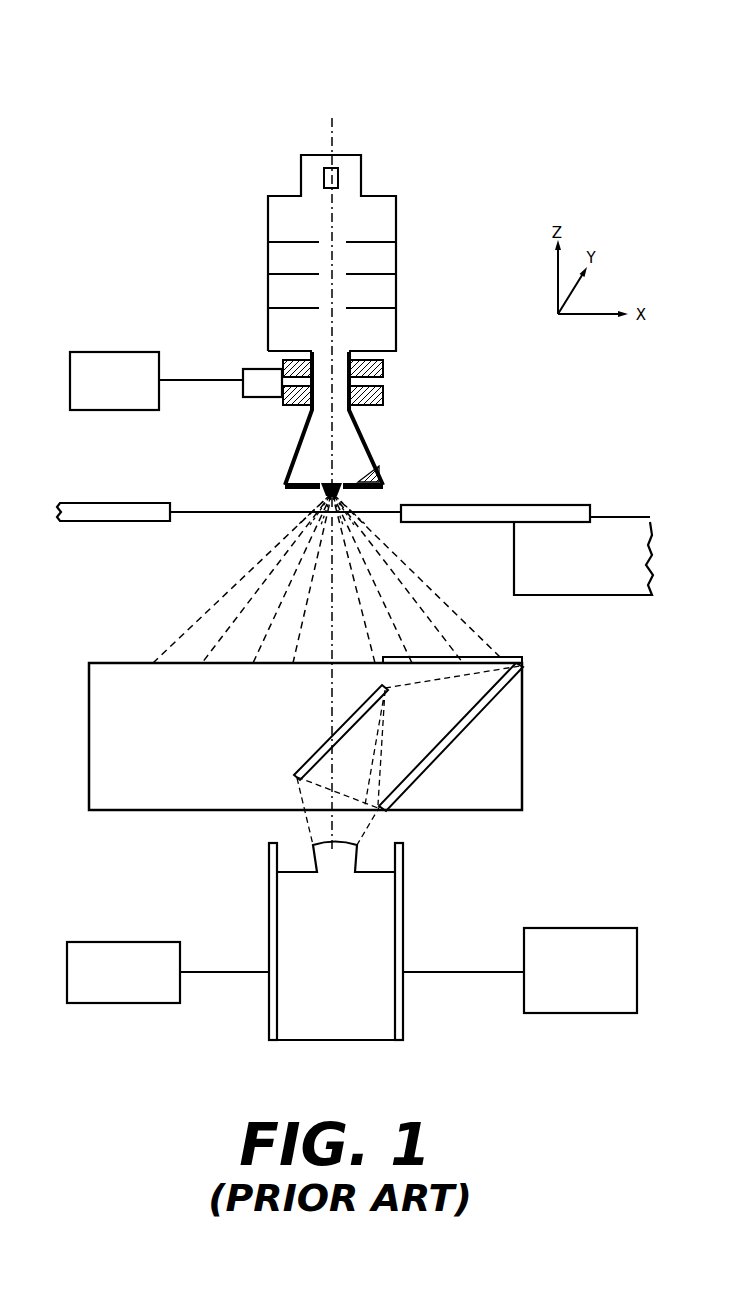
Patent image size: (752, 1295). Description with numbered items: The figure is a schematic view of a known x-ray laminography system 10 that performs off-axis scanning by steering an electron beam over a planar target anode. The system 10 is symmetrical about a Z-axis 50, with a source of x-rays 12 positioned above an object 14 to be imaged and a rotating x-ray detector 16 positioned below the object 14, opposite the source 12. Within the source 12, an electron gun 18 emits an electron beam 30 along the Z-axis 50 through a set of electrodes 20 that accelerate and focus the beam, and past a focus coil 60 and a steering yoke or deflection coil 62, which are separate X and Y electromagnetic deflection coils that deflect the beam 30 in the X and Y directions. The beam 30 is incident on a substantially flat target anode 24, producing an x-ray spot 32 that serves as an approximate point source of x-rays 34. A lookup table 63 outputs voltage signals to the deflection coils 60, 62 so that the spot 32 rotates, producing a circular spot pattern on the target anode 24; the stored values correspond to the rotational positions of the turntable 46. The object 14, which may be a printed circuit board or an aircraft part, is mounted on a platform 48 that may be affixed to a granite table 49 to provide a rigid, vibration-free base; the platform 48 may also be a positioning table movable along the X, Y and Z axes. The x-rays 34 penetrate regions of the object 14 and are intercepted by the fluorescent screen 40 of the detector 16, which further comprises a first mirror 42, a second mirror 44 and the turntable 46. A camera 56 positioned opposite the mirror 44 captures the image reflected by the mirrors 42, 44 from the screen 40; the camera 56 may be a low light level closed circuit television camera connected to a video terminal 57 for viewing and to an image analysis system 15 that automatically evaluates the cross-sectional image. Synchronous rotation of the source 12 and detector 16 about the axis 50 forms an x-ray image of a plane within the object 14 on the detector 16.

The laminography system 10 is at (519, 106).
The source of x-rays 12 is at (230, 243).
The object 14 is at (196, 512).
The analysis system 15 is at (580, 928).
The rotating x-ray detector 16 is at (565, 669).
The electron gun 18 is at (338, 178).
The set of electrodes 20 is at (368, 274).
The target anode 24 is at (373, 463).
The electron beam 30 is at (333, 438).
The x-ray spot 32 is at (313, 488).
The x-rays 34 is at (207, 600).
The fluorescent screen 40 is at (488, 658).
The first mirror 42 is at (472, 718).
The second mirror 44 is at (300, 768).
The turntable 46 is at (522, 778).
The platform 48 is at (458, 505).
The granite table 49 is at (610, 517).
The Z-axis 50 is at (333, 128).
The camera 56 is at (403, 900).
The video terminal 57 is at (118, 940).
The focus coil 60 is at (283, 362).
The steering yoke or deflection coil 62 is at (290, 406).
The lookup table 63 is at (119, 322).